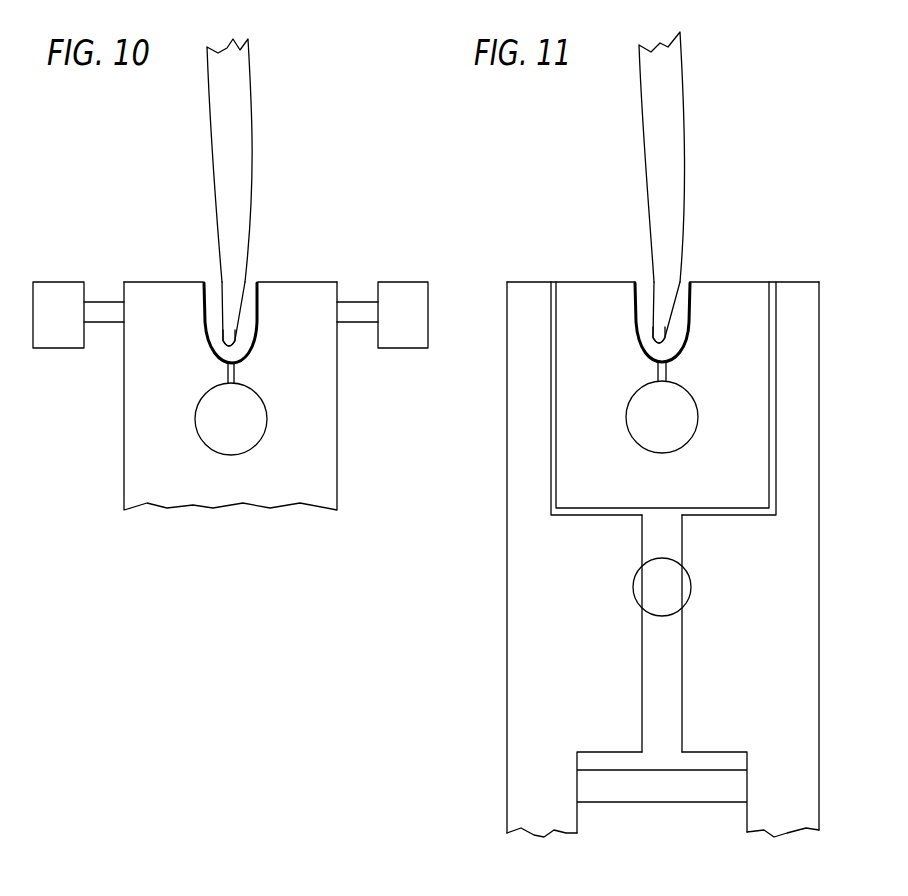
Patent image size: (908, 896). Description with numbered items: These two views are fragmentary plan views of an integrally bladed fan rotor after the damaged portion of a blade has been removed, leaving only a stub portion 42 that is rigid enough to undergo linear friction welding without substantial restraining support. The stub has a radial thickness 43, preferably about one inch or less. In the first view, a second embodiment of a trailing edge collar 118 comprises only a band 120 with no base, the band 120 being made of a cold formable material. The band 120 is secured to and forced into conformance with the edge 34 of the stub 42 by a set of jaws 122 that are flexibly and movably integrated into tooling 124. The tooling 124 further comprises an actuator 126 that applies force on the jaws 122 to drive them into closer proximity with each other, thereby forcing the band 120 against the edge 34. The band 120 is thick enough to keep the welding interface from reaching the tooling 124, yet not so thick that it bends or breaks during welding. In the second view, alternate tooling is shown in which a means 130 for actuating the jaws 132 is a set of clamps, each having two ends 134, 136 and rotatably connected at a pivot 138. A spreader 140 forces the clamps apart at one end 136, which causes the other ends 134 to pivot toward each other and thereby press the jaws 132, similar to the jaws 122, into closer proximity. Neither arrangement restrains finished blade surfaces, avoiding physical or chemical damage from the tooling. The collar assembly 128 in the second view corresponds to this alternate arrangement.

In FIG. 10, the stub portion 42 is at (250, 46).
In FIG. 11, the stub portion 42 is at (681, 42).
In FIG. 10, the radial thickness 43 is at (234, 113).
In FIG. 11, the radial thickness 43 is at (661, 78).
In FIG. 10, the edge 34 is at (231, 340).
In FIG. 11, the edge 34 is at (662, 340).
In FIG. 10, the trailing edge collar 118 is at (262, 246).
In FIG. 11, the trailing edge collar 118 is at (689, 264).
In FIG. 10, the band 120 is at (250, 290).
In FIG. 11, the band 120 is at (684, 285).
In FIG. 10, the jaws 122 is at (192, 298).
In FIG. 10, the tooling 124 is at (339, 278).
In FIG. 10, the actuator 126 is at (61, 290).
In FIG. 11, the sample receiving assembly 128 is at (762, 274).
In FIG. 11, the means for actuating the jaws 130 is at (526, 281).
In FIG. 11, the jaws 132 is at (604, 288).
In FIG. 11, the end 134 is at (527, 347).
In FIG. 11, the end 136 is at (522, 772).
In FIG. 11, the pivot 138 is at (671, 588).
In FIG. 11, the spreader 140 is at (646, 788).